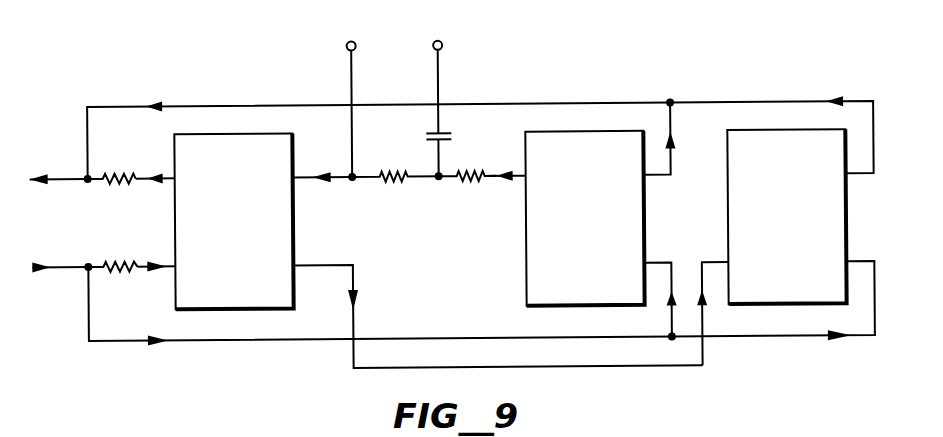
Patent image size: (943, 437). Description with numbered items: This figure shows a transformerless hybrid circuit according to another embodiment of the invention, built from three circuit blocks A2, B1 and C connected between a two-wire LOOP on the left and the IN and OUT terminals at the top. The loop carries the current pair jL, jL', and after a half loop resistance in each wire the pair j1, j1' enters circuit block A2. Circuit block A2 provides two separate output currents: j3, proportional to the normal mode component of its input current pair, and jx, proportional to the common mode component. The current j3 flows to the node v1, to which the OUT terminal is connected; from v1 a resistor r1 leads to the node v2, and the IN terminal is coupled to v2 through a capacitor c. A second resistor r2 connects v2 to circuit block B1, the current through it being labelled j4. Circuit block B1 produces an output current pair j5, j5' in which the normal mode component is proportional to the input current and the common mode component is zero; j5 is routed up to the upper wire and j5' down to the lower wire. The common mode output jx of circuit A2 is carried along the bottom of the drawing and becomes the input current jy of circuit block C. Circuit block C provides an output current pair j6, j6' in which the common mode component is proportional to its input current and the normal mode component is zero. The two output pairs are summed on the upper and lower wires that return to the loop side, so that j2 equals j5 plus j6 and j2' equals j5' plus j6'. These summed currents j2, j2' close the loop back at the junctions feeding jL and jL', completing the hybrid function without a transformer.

The output terminal OUT is at (351, 94).
The input terminal IN is at (436, 72).
The current j2 is at (379, 128).
The loop current jL is at (60, 168).
The current j1 is at (154, 167).
The circuit block A2 is at (233, 221).
The output current j3 is at (323, 187).
The node voltage v1 is at (358, 187).
The resistor r1 is at (395, 166).
The capacitor c is at (446, 144).
The node voltage v2 is at (446, 186).
The resistor r2 is at (467, 165).
The current j4 is at (505, 186).
The circuit block B1 is at (584, 218).
The output current j5 is at (671, 136).
The output current j6 is at (772, 126).
The circuit block C is at (786, 216).
The loop LOOP is at (55, 224).
The loop current jL' is at (62, 278).
The current j1' is at (156, 277).
The current j2' is at (380, 317).
The output current jx is at (497, 315).
The output current j5' is at (660, 301).
The input current jy is at (713, 313).
The output current j6' is at (773, 314).